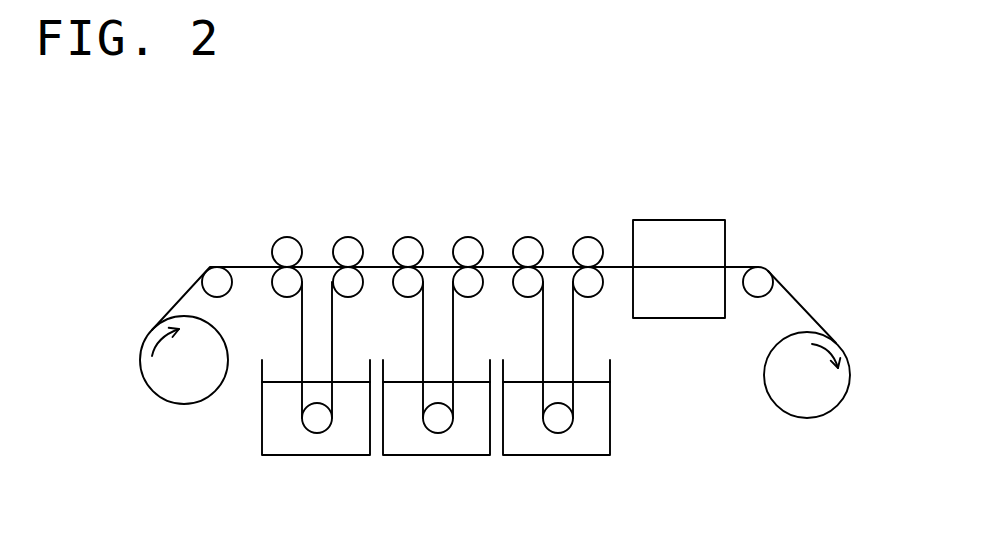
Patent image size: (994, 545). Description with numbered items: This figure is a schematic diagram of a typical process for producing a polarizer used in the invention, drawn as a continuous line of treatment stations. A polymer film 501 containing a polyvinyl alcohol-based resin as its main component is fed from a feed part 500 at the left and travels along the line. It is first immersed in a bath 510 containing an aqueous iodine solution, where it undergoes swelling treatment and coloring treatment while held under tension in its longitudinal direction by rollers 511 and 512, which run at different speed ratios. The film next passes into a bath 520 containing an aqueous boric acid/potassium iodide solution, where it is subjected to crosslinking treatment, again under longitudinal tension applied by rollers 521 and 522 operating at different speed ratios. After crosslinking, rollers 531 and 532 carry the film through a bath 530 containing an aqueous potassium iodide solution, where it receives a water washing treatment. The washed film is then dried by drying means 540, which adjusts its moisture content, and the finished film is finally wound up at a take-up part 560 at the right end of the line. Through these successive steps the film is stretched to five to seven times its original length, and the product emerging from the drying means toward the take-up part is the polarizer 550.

The feed part 500 is at (167, 378).
The polymer film 501 is at (180, 298).
The bath 510 is at (318, 443).
The roller 511 is at (287, 248).
The roller 512 is at (349, 248).
The bath 520 is at (440, 442).
The roller 521 is at (409, 248).
The roller 522 is at (469, 248).
The bath 530 is at (555, 443).
The roller 531 is at (529, 248).
The roller 532 is at (589, 248).
The drying means 540 is at (678, 238).
The polarizer 550 is at (803, 302).
The take-up part 560 is at (825, 390).